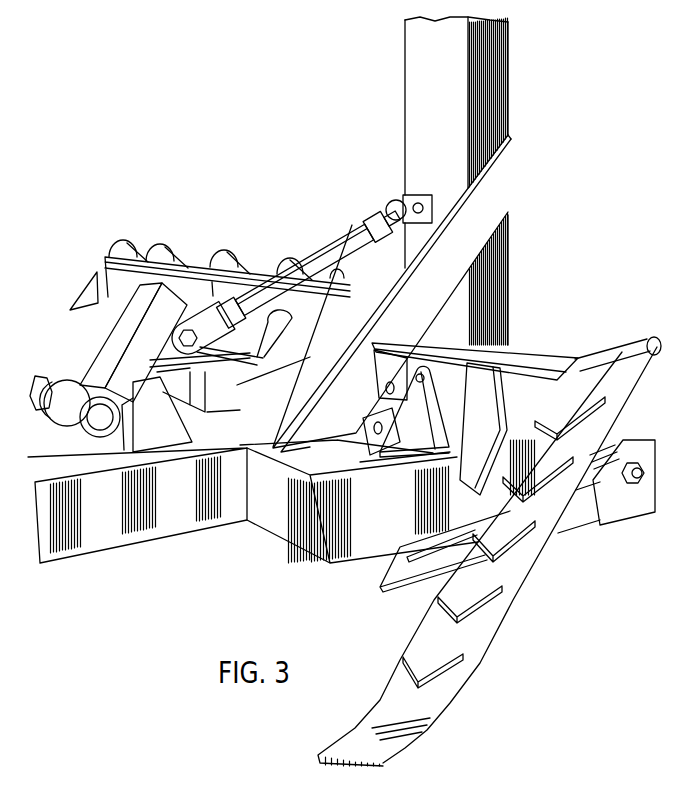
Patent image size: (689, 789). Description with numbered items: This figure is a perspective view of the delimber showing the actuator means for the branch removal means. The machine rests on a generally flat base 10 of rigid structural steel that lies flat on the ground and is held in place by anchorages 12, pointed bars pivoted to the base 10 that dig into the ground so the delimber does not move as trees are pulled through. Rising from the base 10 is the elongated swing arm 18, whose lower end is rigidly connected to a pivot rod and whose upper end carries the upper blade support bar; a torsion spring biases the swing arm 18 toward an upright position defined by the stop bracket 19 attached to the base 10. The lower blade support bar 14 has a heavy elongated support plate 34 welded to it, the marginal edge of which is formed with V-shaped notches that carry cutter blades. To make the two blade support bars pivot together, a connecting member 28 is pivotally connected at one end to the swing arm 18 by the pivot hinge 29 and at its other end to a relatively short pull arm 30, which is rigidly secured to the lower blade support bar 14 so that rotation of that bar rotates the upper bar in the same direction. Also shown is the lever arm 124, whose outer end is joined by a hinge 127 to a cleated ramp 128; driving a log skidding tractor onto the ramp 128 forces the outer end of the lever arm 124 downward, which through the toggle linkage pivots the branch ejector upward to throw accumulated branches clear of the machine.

The base 10 is at (177, 525).
The anchorage 12 is at (380, 583).
The lower blade support bar 14 is at (42, 368).
The swing arm 18 is at (497, 65).
The stop bracket 19 is at (497, 178).
The connecting link 28 is at (323, 258).
The pivot hinge 29 is at (403, 193).
The pull arm 30 is at (128, 355).
The support plate 34 is at (55, 292).
The lever arm 124 is at (510, 360).
The hinge 127 is at (614, 353).
The ramp 128 is at (458, 639).